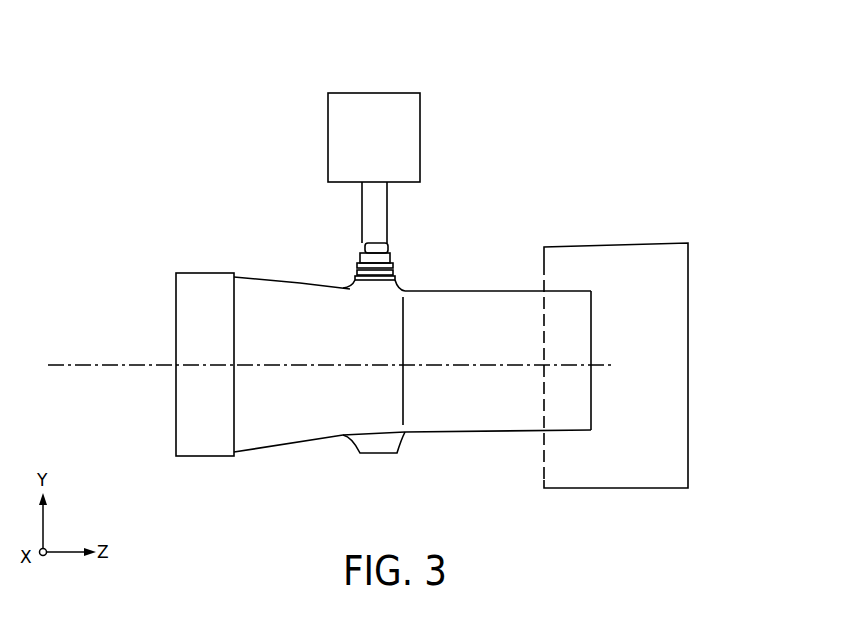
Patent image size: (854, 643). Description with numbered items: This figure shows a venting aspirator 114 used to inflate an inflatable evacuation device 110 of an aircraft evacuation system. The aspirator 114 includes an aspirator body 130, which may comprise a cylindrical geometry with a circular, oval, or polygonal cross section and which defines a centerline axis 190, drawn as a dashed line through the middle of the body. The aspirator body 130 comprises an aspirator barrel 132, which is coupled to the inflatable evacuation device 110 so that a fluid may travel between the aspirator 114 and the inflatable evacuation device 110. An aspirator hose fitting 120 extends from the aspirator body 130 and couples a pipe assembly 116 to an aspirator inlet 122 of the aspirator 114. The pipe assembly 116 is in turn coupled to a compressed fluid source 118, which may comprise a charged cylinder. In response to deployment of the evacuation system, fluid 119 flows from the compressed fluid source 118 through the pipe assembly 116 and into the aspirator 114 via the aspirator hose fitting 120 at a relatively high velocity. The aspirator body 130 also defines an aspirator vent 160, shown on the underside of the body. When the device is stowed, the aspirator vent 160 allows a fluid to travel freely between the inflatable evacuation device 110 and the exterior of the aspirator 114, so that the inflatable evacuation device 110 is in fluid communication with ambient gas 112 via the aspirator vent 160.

The inflatable evacuation device 110 is at (662, 262).
The ambient gas 112 is at (138, 402).
The venting aspirator 114 is at (485, 201).
The pipe assembly 116 is at (361, 212).
The compressed fluid source 118 is at (338, 92).
The fluid 119 is at (392, 148).
The aspirator hose fitting 120 is at (395, 262).
The aspirator inlet 122 is at (400, 290).
The aspirator body 130 is at (312, 443).
The aspirator barrel 132 is at (477, 420).
The aspirator vent 160 is at (387, 455).
The centerline axis 190 is at (98, 363).